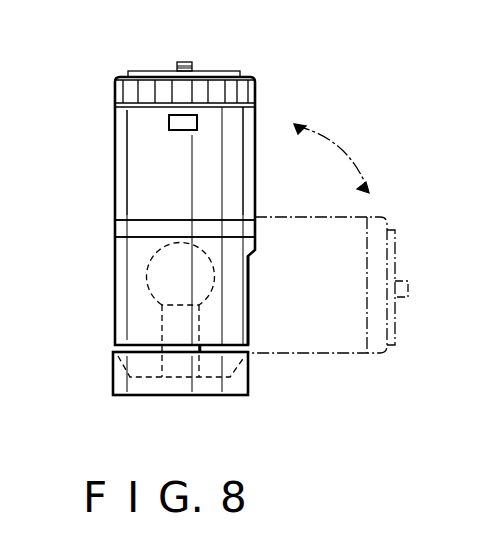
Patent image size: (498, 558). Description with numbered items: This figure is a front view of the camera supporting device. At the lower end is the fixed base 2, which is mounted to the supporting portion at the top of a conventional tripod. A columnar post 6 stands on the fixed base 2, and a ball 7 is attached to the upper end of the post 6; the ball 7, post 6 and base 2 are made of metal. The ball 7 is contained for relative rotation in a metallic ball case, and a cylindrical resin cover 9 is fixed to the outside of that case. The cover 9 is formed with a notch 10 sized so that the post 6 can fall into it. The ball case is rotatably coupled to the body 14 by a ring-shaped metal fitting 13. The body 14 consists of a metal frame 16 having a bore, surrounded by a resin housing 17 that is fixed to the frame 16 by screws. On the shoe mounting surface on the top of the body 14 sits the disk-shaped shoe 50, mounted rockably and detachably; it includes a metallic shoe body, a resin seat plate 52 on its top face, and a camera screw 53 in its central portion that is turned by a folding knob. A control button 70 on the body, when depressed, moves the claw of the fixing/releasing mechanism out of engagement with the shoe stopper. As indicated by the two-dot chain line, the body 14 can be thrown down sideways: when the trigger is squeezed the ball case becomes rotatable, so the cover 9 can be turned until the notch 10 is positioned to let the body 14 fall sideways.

The fixed base 2 is at (240, 390).
The columnar post 6 is at (176, 336).
The ball 7 is at (146, 282).
The resin cover 9 is at (113, 308).
The notch 10 is at (249, 303).
The ring-shaped metal fitting 13 is at (118, 228).
The body 14 is at (252, 158).
The metal frame 16 is at (120, 168).
The resin housing 17 is at (250, 190).
The shoe 50 is at (252, 95).
The resin seat plate 52 is at (130, 71).
The camera screw 53 is at (182, 62).
The control button 70 is at (176, 123).